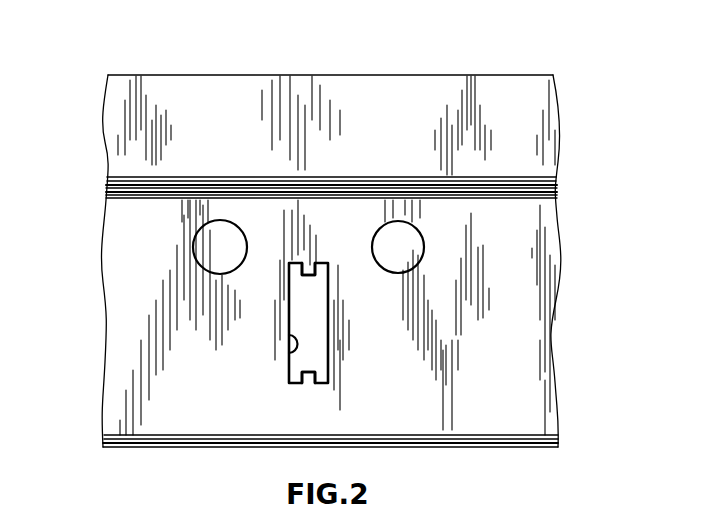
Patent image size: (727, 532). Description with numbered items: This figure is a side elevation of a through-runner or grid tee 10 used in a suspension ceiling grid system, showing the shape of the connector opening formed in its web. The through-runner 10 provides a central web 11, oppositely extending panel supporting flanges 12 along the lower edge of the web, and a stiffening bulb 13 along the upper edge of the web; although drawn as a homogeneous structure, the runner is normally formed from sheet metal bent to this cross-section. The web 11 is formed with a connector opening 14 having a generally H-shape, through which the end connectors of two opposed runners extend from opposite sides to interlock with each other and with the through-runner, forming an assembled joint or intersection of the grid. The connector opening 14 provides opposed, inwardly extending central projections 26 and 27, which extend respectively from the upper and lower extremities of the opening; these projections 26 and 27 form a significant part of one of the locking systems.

The through-runner 10 is at (100, 44).
The central web 11 is at (527, 372).
The panel supporting flanges 12 is at (184, 437).
The stiffening bulb 13 is at (423, 74).
The connector opening 14 is at (286, 351).
The upper central projection 26 is at (308, 276).
The lower central projection 27 is at (313, 371).